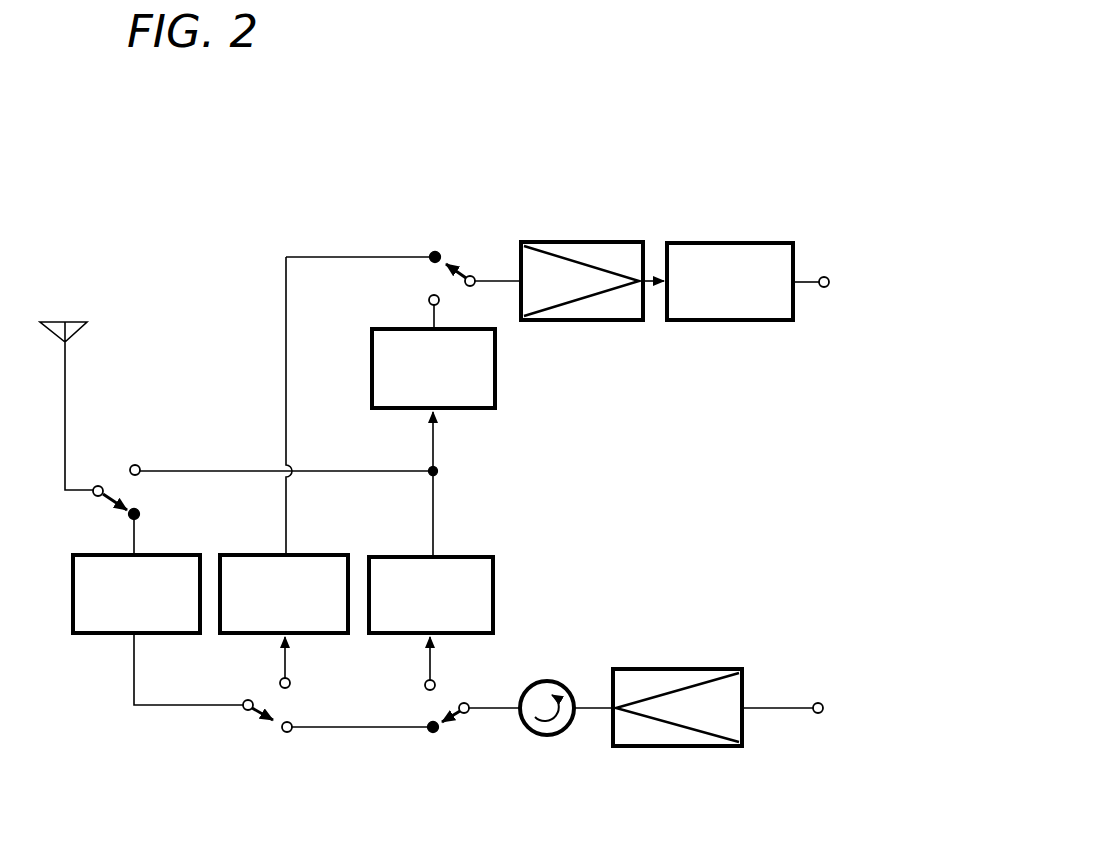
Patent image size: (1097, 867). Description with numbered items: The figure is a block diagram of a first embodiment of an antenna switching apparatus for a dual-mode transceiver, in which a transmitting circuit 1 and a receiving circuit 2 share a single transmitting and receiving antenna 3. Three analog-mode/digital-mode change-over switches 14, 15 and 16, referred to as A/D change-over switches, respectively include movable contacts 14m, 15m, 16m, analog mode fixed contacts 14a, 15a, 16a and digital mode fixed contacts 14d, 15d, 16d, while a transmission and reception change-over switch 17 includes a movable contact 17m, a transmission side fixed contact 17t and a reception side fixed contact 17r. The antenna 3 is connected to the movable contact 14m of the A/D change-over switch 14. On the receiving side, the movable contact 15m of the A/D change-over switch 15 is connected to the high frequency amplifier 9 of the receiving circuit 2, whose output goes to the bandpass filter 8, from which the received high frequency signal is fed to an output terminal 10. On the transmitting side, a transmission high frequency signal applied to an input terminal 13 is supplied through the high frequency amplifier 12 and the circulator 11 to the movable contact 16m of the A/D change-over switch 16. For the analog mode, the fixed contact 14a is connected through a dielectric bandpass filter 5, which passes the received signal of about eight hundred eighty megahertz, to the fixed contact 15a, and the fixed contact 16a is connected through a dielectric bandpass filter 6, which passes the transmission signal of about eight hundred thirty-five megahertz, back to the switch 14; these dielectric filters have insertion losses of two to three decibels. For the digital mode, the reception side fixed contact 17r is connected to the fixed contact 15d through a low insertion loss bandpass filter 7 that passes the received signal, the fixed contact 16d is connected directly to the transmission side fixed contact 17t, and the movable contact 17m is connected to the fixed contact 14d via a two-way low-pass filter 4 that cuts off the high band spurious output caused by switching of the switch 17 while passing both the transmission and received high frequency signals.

The transmitting circuit 1 is at (534, 625).
The receiving circuit 2 is at (533, 373).
The transmitting and receiving antenna 3 is at (73, 322).
The two-way low-pass filter 4 is at (100, 633).
The dielectric bandpass filter 5 is at (472, 408).
The dielectric bandpass filter 6 is at (482, 556).
The bandpass filter 7 is at (327, 555).
The bandpass filter 8 is at (728, 243).
The high frequency amplifier 9 is at (588, 242).
The output terminal 10 is at (823, 277).
The circulator 11 is at (547, 735).
The high frequency amplifier 12 is at (673, 746).
The input terminal 13 is at (816, 714).
The A/D change-over switch 14 is at (128, 481).
The analog mode fixed contact 14a is at (135, 465).
The digital mode fixed contact 14d is at (140, 513).
The movable contact 14m is at (96, 497).
The A/D change-over switch 15 is at (437, 250).
The analog mode fixed contact 15a is at (428, 300).
The digital mode fixed contact 15d is at (433, 251).
The movable contact 15m is at (470, 287).
The A/D change-over switch 16 is at (439, 717).
The analog mode fixed contact 16a is at (424, 686).
The digital mode fixed contact 16d is at (430, 733).
The movable contact 16m is at (464, 702).
The transmission and reception change-over switch 17 is at (266, 717).
The movable contact 17m is at (245, 701).
The reception side fixed contact 17r is at (290, 683).
The transmission side fixed contact 17t is at (287, 733).